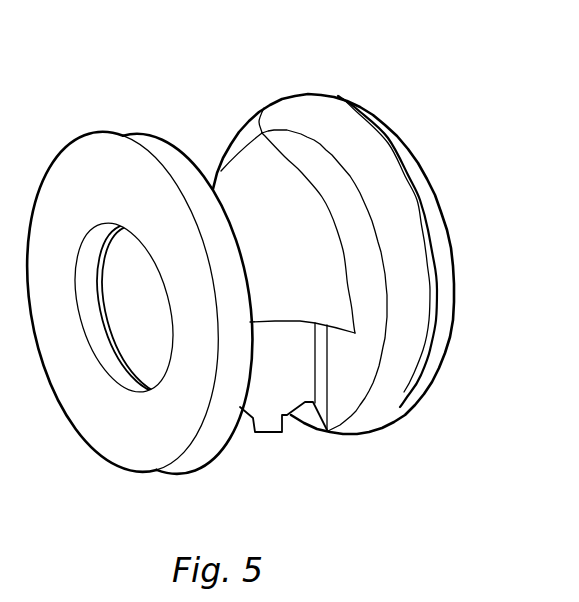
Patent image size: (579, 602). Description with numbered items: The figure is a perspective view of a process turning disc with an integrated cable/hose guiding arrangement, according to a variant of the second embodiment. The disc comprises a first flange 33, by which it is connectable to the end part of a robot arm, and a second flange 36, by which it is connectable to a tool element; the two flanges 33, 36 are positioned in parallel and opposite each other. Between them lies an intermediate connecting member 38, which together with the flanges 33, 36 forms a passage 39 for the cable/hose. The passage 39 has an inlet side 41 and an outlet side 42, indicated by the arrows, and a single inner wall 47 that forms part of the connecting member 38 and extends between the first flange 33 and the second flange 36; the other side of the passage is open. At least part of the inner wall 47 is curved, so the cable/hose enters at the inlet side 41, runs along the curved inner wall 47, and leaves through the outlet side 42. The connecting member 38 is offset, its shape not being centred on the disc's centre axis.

The first flange 33 is at (362, 132).
The second flange 36 is at (157, 152).
The intermediate connecting member 38 is at (460, 155).
The passage 39 is at (303, 260).
The inlet side 41 is at (283, 199).
The outlet side 42 is at (291, 391).
The inner wall 47 is at (210, 188).